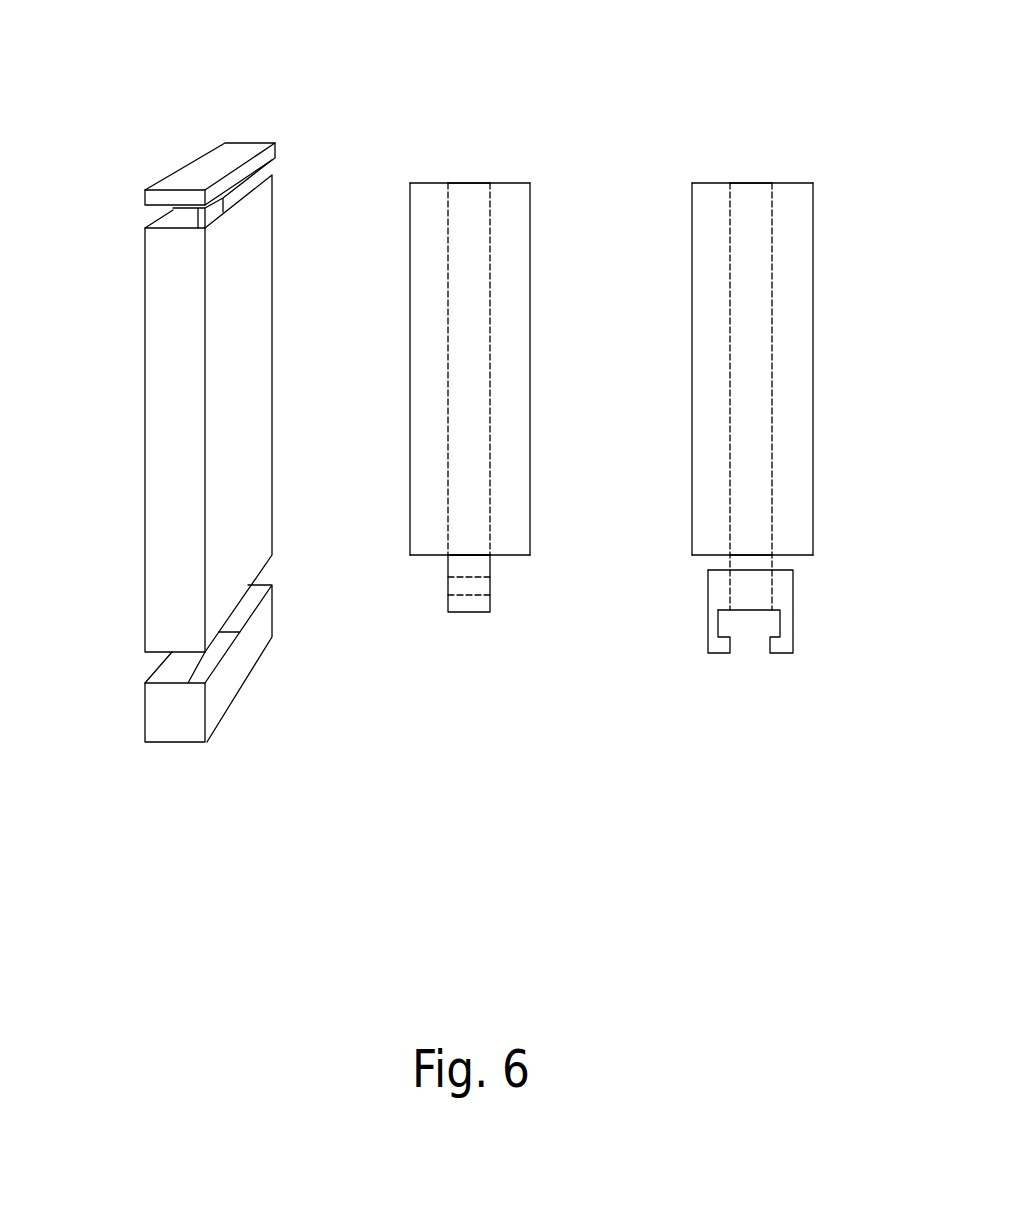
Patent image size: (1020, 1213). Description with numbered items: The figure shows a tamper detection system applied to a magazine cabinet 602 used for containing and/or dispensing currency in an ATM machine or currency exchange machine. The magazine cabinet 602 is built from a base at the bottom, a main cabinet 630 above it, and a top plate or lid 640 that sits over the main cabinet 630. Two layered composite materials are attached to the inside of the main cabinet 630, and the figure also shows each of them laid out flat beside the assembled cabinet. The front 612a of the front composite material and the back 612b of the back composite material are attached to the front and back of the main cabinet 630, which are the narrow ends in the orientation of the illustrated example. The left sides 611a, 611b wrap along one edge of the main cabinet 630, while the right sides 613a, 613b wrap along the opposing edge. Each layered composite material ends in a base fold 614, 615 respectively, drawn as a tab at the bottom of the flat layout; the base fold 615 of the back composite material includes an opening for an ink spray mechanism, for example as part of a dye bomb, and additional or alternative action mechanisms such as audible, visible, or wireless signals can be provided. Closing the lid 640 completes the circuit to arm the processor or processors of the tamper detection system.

The magazine cabinet 602 is at (210, 80).
The top plate or lid 640 is at (183, 172).
The main cabinet 630 is at (160, 323).
The left side 611a is at (428, 392).
The front 612a is at (460, 278).
The right side 613a is at (515, 393).
The base fold 614 is at (458, 612).
The left side 611b is at (805, 340).
The back 612b is at (745, 278).
The right side 613b is at (708, 340).
The base fold 615 is at (715, 653).